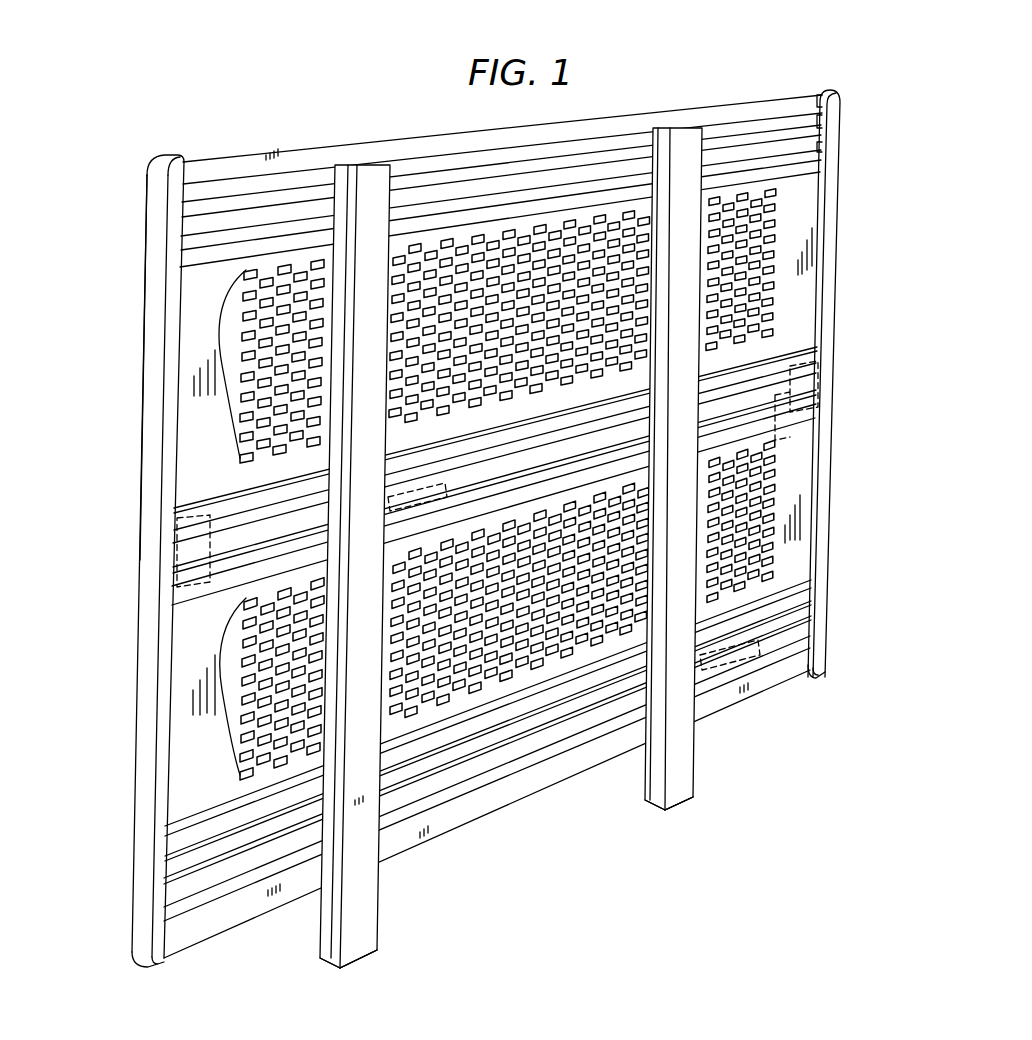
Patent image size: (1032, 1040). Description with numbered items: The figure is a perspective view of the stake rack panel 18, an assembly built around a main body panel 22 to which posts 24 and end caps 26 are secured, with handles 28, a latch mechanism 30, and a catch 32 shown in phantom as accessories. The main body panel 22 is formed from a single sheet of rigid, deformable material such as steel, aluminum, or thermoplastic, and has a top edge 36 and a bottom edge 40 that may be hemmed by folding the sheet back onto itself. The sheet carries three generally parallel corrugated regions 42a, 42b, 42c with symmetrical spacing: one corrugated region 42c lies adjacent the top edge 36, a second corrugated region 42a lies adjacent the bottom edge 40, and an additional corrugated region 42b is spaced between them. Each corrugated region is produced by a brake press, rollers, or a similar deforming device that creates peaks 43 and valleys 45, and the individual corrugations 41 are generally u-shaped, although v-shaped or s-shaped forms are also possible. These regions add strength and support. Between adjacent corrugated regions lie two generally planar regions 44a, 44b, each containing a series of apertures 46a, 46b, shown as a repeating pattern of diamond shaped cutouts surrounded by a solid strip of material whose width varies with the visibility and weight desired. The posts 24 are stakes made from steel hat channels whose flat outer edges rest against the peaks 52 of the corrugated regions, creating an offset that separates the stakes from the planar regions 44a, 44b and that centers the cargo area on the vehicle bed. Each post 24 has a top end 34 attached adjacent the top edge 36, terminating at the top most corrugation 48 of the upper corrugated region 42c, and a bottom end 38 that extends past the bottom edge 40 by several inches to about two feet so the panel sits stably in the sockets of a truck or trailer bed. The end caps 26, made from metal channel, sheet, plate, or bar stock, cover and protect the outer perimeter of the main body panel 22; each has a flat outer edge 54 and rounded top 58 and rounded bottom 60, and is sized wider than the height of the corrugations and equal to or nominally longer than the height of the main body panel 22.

The stake rack panel 18 is at (259, 98).
The main body panel 22 is at (615, 130).
The posts 24 is at (647, 802).
The end caps 26 is at (150, 455).
The handles 28 is at (400, 503).
The latch mechanism 30 is at (818, 382).
The catch 32 is at (172, 558).
The top end 34 is at (370, 182).
The top edge 36 is at (268, 148).
The bottom end 38 is at (690, 800).
The bottom edge 40 is at (530, 800).
The corrugations 41 is at (830, 635).
The corrugated region 42a is at (175, 900).
The corrugated region 42b is at (172, 600).
The corrugated region 42c is at (190, 236).
The peaks 43 is at (188, 202).
The planar region 44a is at (800, 520).
The planar region 44b is at (812, 270).
The valleys 45 is at (190, 216).
The series of apertures 46a is at (215, 690).
The series of apertures 46b is at (215, 390).
The top most corrugation 48 is at (832, 118).
The peaks 52 is at (832, 148).
The flat outer edge 54 is at (150, 805).
The rounded top 58 is at (165, 160).
The rounded bottom 60 is at (822, 680).